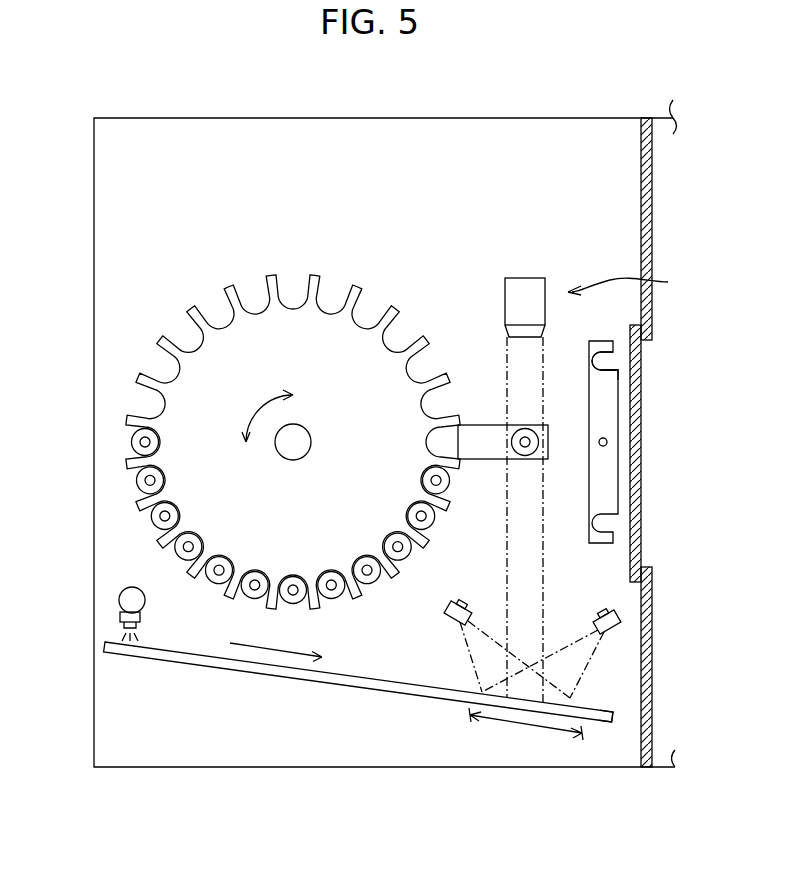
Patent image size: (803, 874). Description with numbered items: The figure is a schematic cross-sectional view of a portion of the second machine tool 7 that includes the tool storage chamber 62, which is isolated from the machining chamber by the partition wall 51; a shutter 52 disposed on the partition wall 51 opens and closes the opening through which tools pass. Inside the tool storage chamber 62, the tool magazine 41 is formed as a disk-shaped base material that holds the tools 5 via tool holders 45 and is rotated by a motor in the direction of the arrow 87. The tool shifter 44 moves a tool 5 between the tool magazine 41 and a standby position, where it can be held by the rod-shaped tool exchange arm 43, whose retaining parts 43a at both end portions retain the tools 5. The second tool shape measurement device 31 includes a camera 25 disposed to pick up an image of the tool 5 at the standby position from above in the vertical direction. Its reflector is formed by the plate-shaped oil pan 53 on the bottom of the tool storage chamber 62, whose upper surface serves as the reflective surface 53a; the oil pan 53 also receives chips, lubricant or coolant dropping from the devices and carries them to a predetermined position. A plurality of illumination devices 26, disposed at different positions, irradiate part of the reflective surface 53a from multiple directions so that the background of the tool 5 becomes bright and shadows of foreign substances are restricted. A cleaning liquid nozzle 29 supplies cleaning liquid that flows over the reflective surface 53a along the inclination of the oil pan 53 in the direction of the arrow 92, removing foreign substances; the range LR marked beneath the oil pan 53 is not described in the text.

The second machine tool 7 is at (597, 99).
The tool storage chamber 62 is at (148, 133).
The partition wall 51 is at (647, 190).
The tool shape measurement device 31 is at (635, 282).
The tool magazine 41 is at (187, 313).
The arrow 87 is at (250, 424).
The tool holder 45 is at (131, 442).
The tool 5 is at (145, 481).
The tool shifter 44 is at (492, 436).
The camera 25 is at (525, 292).
The tool exchange arm 43 is at (604, 498).
The shutter 52 is at (600, 361).
The retaining part 43a is at (616, 369).
The cleaning liquid nozzle 29 is at (120, 596).
The oil pan 53 is at (215, 665).
The reflective surface 53a is at (602, 709).
The arrow 92 is at (272, 650).
The movement range LR is at (520, 724).
The illumination device 26 is at (620, 613).